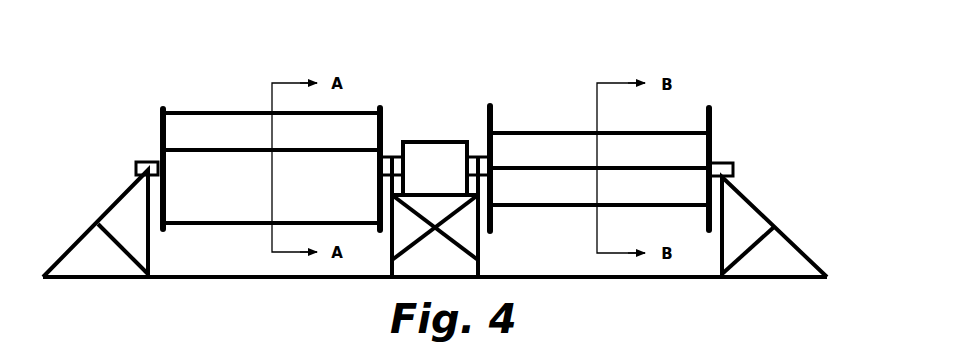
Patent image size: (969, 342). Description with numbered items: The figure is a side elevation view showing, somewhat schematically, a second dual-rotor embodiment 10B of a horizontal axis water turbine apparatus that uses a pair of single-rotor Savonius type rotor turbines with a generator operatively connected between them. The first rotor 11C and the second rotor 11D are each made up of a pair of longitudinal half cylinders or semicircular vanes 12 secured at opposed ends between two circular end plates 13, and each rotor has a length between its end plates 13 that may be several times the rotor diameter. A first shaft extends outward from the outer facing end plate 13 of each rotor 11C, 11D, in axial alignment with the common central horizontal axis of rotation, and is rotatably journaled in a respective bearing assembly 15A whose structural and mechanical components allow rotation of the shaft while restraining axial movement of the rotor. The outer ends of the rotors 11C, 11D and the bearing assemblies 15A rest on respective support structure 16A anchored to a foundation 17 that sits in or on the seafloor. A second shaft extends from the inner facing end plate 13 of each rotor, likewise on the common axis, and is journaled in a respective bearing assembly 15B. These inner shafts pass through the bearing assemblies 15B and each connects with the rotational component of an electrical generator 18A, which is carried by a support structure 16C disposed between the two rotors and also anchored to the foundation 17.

The second dual-rotor embodiment 10B is at (692, 82).
The first rotor 11C is at (247, 105).
The second rotor 11D is at (577, 128).
The semicircular vanes 12 is at (197, 142).
The circular end plates 13 is at (162, 110).
The bearing assembly 15A is at (155, 160).
The bearing assembly 15B is at (435, 141).
The support structure 16A is at (105, 212).
The support structure 16C is at (390, 256).
The foundation 17 is at (517, 275).
The electrical generator 18A is at (414, 173).